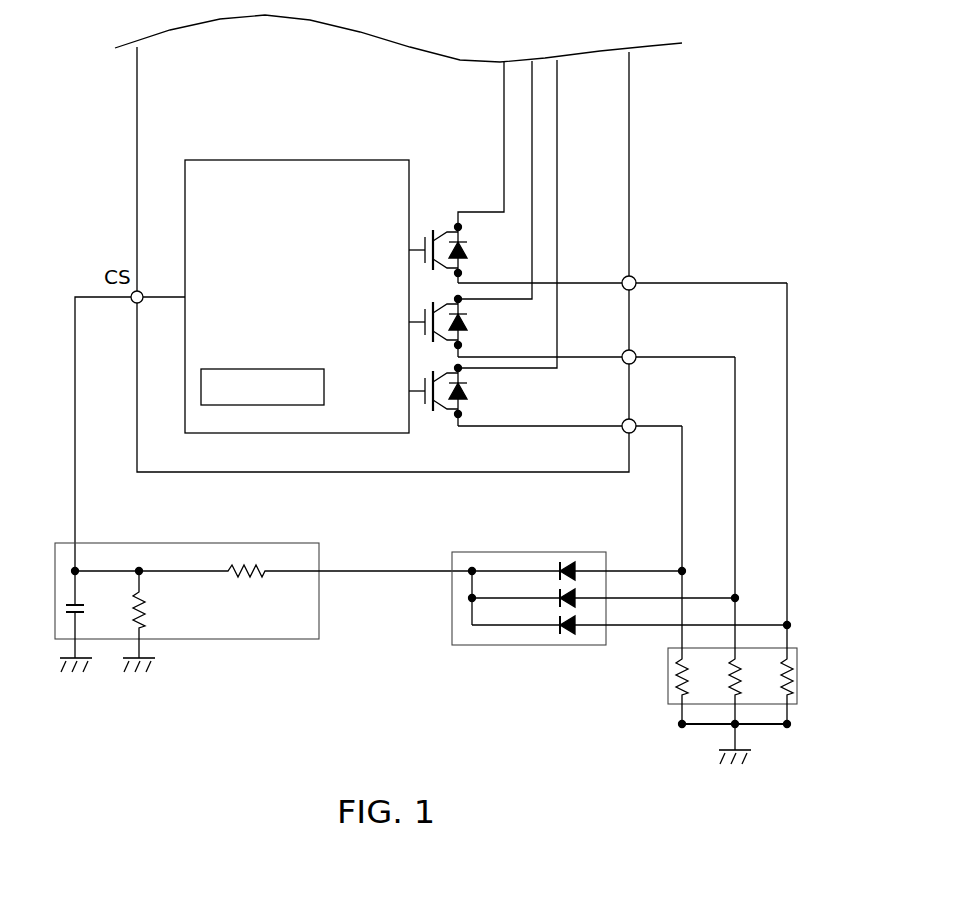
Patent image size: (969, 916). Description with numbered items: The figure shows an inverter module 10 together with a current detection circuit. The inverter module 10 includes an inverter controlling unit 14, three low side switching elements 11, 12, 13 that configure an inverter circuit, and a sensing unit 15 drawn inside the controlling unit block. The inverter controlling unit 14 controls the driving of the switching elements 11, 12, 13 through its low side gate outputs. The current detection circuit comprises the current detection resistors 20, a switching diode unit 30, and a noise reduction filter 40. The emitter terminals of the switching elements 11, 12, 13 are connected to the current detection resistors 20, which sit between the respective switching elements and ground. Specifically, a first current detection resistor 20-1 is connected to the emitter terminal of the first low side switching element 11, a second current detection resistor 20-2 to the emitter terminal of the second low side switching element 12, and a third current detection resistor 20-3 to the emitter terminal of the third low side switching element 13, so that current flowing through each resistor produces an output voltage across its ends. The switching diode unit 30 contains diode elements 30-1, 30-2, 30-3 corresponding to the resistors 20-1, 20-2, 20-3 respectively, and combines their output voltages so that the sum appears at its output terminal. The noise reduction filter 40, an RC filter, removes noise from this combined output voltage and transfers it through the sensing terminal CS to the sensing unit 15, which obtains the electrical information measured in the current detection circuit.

The inverter module 10 is at (613, 181).
The first low side switching element 11 is at (443, 228).
The second low side switching element 12 is at (442, 302).
The third low side switching element 13 is at (442, 371).
The inverter controlling unit 14 is at (330, 160).
The sensing unit 15 is at (245, 369).
The current detection resistors 20 is at (709, 528).
The first current detection resistor 20-1 is at (793, 680).
The second current detection resistor 20-2 is at (727, 683).
The third current detection resistor 20-3 is at (680, 688).
The switching diode unit 30 is at (619, 602).
The first diode element 30-1 is at (570, 633).
The second diode element 30-2 is at (563, 601).
The third diode element 30-3 is at (567, 564).
The noise reduction filter 40 is at (320, 555).